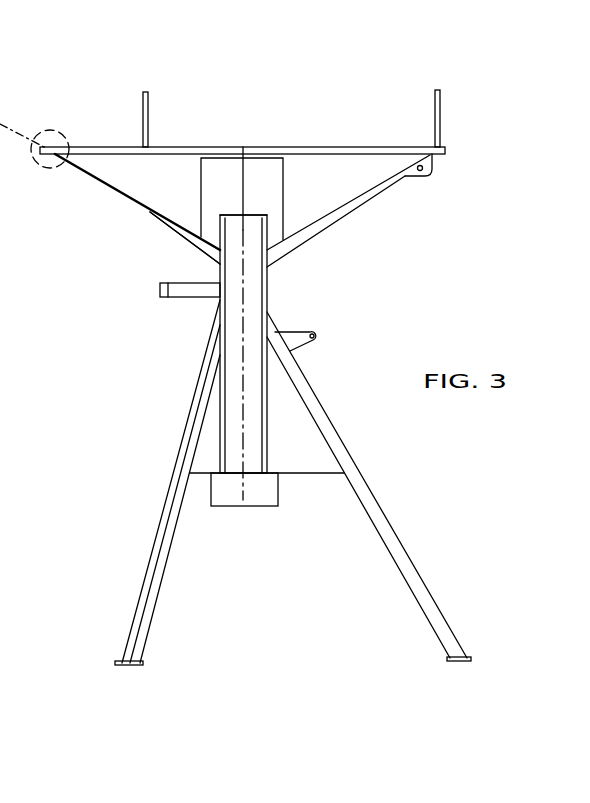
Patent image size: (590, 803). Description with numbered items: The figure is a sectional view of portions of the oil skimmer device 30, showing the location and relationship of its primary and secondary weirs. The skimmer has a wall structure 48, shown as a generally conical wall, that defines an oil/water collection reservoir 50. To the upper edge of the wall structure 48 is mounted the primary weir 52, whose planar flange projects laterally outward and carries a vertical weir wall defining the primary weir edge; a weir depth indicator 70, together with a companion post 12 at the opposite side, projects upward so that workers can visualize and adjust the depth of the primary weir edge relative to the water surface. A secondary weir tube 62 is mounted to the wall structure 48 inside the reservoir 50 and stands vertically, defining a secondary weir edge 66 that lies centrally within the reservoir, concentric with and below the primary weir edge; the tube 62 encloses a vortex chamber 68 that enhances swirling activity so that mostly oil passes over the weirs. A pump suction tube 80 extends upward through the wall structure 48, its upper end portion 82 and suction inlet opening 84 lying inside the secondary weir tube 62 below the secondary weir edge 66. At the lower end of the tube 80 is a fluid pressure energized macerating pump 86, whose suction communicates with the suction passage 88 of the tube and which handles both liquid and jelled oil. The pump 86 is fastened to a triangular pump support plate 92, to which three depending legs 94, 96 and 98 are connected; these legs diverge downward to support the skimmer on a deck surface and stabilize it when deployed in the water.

The stop post 12 is at (441, 117).
The oil skimmer device 30 is at (506, 31).
The wall structure 48 is at (105, 185).
The oil/water collection reservoir 50 is at (143, 188).
The primary weir 52 is at (379, 134).
The secondary weir tube 62 is at (283, 174).
The secondary weir edge 66 is at (268, 157).
The vortex chamber 68 is at (219, 167).
The weir depth indicator 70 is at (143, 97).
The pump suction tube 80 is at (268, 281).
The upper end portion 82 is at (230, 228).
The suction inlet opening 84 is at (292, 232).
The fluid pressure energized pump 86 is at (258, 215).
The suction passage 88 is at (232, 317).
The pump support plate 92 is at (298, 472).
The depending leg 94 is at (142, 590).
The depending leg 96 is at (148, 612).
The depending leg 98 is at (436, 603).